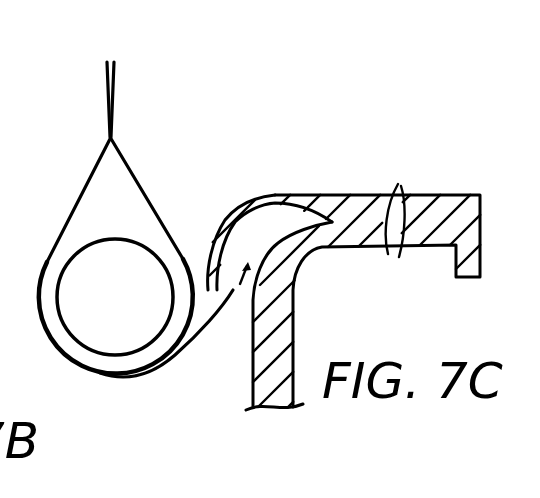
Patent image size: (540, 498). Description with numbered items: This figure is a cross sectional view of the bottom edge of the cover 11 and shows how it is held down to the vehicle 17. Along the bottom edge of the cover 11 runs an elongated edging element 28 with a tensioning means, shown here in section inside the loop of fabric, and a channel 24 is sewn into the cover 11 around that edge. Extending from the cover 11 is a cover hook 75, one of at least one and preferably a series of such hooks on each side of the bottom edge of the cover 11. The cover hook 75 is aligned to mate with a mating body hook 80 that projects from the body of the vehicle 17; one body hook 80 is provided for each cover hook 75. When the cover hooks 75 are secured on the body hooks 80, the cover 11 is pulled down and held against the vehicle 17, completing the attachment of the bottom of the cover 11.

The cover 11 is at (107, 103).
The channel 24 is at (152, 198).
The elongated edging element 28 is at (86, 319).
The cover hook 75 is at (196, 355).
The mating body hook 80 is at (233, 213).
The vehicle 17 is at (432, 193).